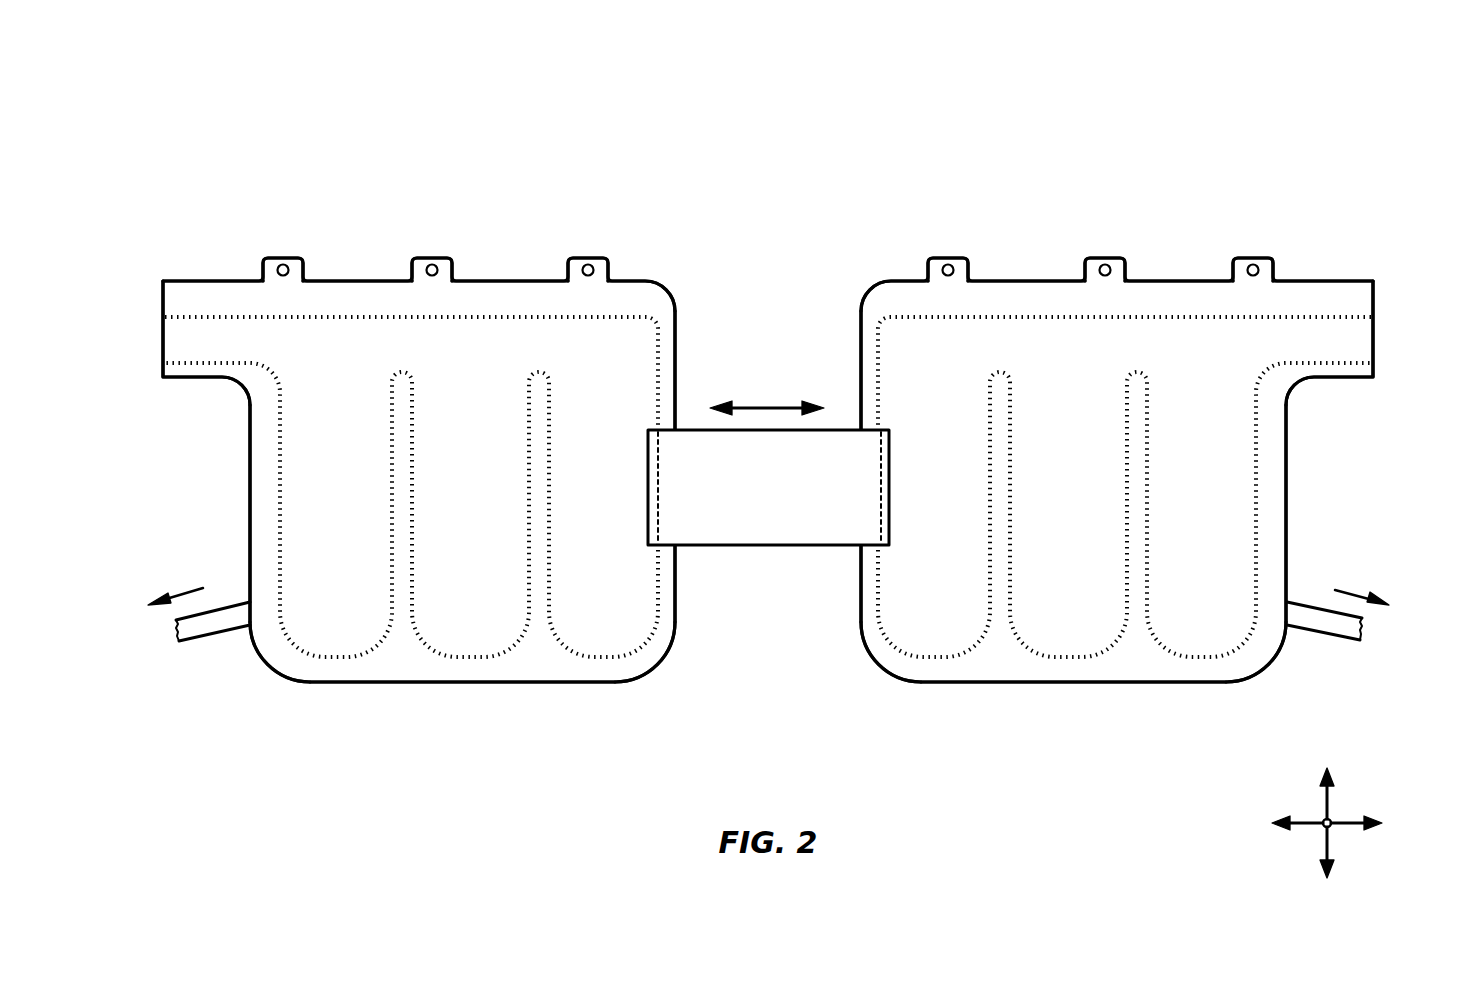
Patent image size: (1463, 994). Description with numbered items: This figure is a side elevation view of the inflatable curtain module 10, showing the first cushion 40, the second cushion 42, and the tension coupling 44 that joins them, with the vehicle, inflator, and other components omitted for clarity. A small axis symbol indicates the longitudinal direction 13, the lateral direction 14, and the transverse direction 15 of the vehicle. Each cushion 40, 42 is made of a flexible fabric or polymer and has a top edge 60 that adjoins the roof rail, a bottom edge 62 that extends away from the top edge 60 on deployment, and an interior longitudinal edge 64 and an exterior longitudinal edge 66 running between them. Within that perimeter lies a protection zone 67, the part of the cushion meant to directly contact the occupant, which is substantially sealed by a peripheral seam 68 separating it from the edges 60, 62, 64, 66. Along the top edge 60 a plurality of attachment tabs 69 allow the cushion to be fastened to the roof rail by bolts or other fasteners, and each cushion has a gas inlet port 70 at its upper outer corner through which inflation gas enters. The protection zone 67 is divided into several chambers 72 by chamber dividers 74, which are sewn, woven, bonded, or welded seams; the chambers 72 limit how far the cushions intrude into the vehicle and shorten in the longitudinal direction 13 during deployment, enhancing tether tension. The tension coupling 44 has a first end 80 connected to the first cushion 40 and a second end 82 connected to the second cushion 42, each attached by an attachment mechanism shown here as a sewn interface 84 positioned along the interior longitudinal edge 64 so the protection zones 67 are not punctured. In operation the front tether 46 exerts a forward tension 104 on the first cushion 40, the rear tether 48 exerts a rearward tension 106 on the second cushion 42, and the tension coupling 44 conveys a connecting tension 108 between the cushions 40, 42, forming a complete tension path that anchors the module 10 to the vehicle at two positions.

The inflatable curtain module 10 is at (848, 155).
The longitudinal direction 13 is at (1345, 828).
The lateral direction 14 is at (1331, 818).
The transverse direction 15 is at (1327, 793).
The first cushion 40 is at (405, 185).
The second cushion 42 is at (1115, 185).
The tension coupling 44 is at (768, 398).
The front tether 46 is at (208, 620).
The rear tether 48 is at (1330, 635).
The top edge 60 is at (517, 297).
The bottom edge 62 is at (440, 670).
The interior longitudinal edge 64 is at (668, 597).
The exterior longitudinal edge 66 is at (250, 455).
The protection zone 67 is at (770, 490).
The peripheral seam 68 is at (433, 322).
The attachment tab 69 is at (276, 268).
The gas inlet port 70 is at (173, 333).
The chamber 72 is at (770, 517).
The chamber divider 74 is at (530, 578).
The first end 80 is at (668, 478).
The second end 82 is at (868, 478).
The sewn interface 84 is at (657, 495).
The forward tension 104 is at (1355, 590).
The rearward tension 106 is at (178, 590).
The connecting tension 108 is at (765, 405).